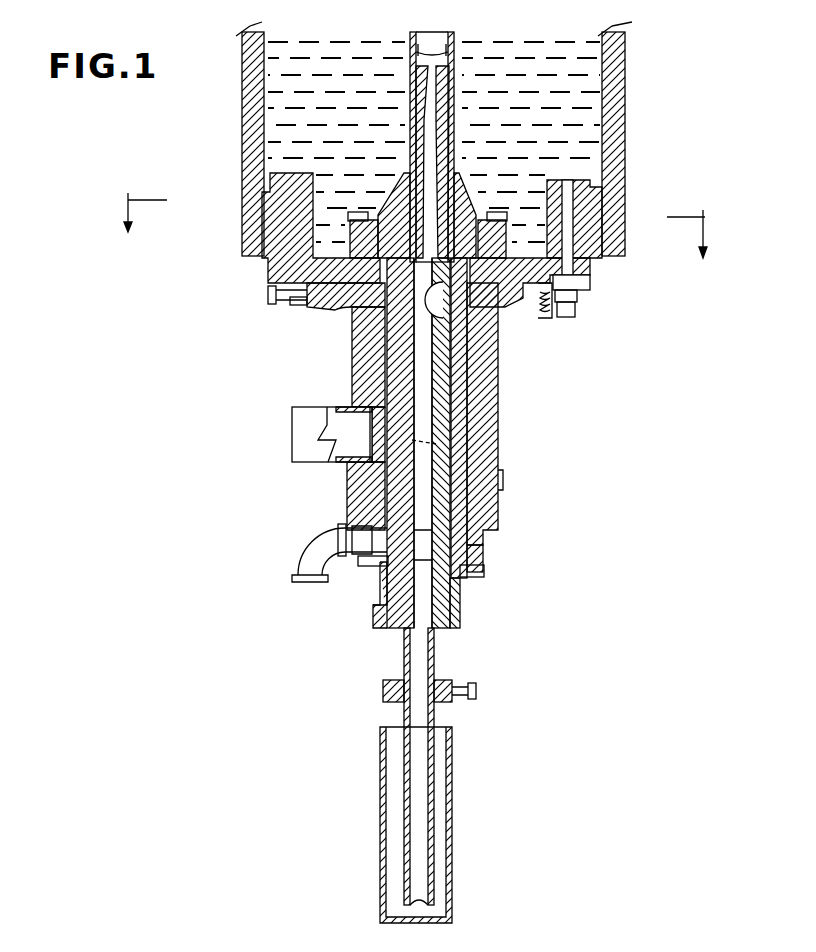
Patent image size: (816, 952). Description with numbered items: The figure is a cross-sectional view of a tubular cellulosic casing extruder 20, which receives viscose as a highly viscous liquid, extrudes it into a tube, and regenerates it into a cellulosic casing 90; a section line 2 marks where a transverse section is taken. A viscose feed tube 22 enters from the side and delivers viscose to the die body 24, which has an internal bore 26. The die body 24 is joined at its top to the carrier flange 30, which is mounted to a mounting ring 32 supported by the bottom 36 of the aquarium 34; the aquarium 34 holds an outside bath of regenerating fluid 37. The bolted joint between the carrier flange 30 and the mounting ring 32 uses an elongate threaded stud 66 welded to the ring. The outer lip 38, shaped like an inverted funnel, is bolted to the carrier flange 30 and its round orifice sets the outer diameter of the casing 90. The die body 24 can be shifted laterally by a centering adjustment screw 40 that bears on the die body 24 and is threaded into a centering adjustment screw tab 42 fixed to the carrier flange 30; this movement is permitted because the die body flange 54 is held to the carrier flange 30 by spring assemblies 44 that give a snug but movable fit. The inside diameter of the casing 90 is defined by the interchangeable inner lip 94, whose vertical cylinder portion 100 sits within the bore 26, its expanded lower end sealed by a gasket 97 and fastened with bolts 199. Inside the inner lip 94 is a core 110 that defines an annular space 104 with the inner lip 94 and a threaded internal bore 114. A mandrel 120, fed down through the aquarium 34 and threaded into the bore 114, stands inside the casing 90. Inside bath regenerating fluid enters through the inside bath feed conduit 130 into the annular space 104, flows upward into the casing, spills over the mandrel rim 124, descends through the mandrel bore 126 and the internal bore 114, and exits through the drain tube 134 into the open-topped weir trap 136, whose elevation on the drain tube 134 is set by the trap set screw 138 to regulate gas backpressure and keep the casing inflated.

The section line 2- 2 is at (416, 225).
The tubular cellulosic casing extruder 20 is at (677, 106).
The viscose feed tube 22 is at (292, 433).
The die body 24 is at (497, 447).
The internal bore 26 is at (470, 402).
The carrier flange 30 is at (590, 280).
The mounting ring 32 is at (590, 187).
The aquarium 34 is at (240, 138).
The aquarium bottom 36 is at (245, 248).
The regenerating fluid 37 is at (322, 105).
The outer lip 38 is at (472, 192).
The centering adjustment screw 40 is at (268, 292).
The centering adjustment screw tab 42 is at (297, 305).
The spring assembly 44 is at (548, 317).
The die body flange 54 is at (322, 307).
The elongate threaded stud 66 is at (578, 306).
The cellulosic casing 90 is at (626, 71).
The inner lip 94 is at (484, 340).
The gasket 97 is at (499, 478).
The vertical cylinder portion 100 is at (470, 424).
The annular space 104 is at (352, 493).
The core 110 is at (470, 520).
The threaded internal bore 114 is at (425, 547).
The mandrel 120 is at (410, 63).
The mandrel rim 124 is at (410, 30).
The mandrel bore 126 is at (430, 97).
The inside bath feed conduit 130 is at (312, 568).
The drain tube 134 is at (438, 645).
The weir trap 136 is at (455, 822).
The trap set screw 138 is at (476, 690).
The bolts 199 is at (372, 560).